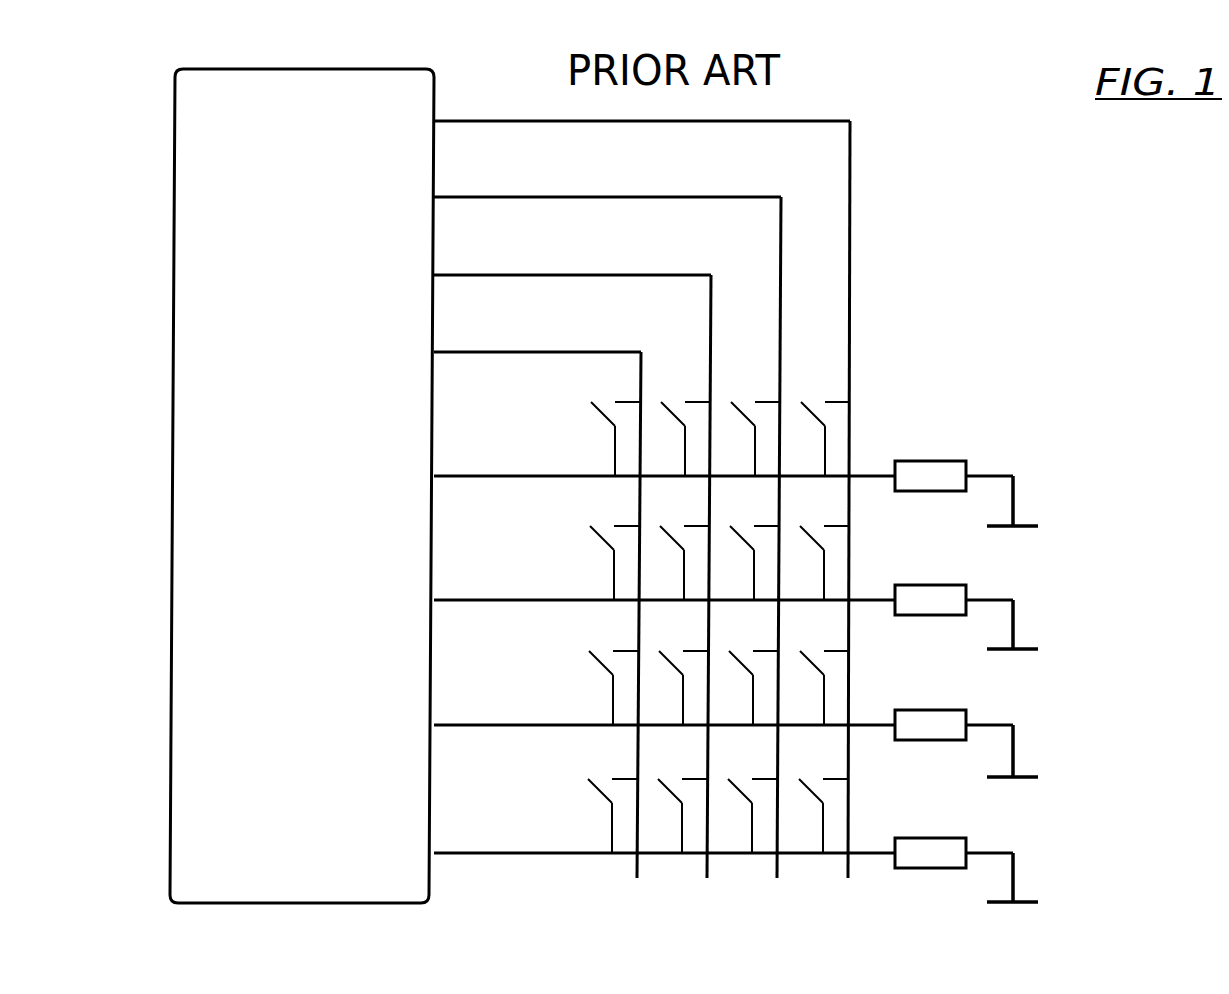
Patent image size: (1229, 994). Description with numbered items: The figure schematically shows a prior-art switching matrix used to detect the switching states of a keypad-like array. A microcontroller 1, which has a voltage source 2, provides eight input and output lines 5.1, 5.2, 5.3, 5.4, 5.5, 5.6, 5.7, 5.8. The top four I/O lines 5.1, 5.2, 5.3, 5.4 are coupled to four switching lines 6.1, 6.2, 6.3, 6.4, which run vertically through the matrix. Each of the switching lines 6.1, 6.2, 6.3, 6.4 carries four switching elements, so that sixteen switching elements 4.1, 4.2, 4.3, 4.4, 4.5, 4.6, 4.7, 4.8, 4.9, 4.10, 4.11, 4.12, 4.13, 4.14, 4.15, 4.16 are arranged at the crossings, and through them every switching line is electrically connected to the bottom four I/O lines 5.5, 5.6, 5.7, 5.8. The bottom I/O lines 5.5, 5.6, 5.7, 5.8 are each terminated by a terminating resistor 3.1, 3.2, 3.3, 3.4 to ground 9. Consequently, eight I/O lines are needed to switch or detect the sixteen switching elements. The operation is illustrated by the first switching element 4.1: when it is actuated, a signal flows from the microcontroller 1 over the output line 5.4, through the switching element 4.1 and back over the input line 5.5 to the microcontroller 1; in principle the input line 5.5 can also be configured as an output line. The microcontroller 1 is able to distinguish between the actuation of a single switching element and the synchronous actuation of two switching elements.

The microcontroller 1 is at (217, 240).
The voltage source 2 is at (217, 390).
The terminating resistor 3.1 is at (919, 474).
The terminating resistor 3.2 is at (919, 598).
The terminating resistor 3.3 is at (919, 723).
The terminating resistor 3.4 is at (919, 851).
The switching element 4.1 is at (615, 439).
The switching element 4.2 is at (614, 563).
The switching element 4.3 is at (613, 688).
The switching element 4.4 is at (612, 816).
The switching element 4.5 is at (685, 439).
The switching element 4.6 is at (684, 563).
The switching element 4.7 is at (683, 688).
The switching element 4.8 is at (682, 816).
The switching element 4.9 is at (755, 439).
The switching element 4.10 is at (757, 563).
The switching element 4.11 is at (756, 688).
The switching element 4.12 is at (751, 816).
The switching element 4.13 is at (828, 439).
The switching element 4.14 is at (827, 563).
The switching element 4.15 is at (827, 688).
The switching element 4.16 is at (826, 816).
The input and output line 5.1 is at (643, 121).
The input and output line 5.2 is at (486, 197).
The input and output line 5.3 is at (486, 275).
The input and output line 5.4 is at (485, 352).
The input and output line 5.5 is at (483, 476).
The input and output line 5.6 is at (483, 600).
The input and output line 5.7 is at (483, 725).
The input and output line 5.8 is at (483, 853).
The switching line 6.1 is at (641, 376).
The switching line 6.2 is at (711, 298).
The switching line 6.3 is at (781, 217).
The switching line 6.4 is at (850, 147).
The ground 9 is at (1028, 518).